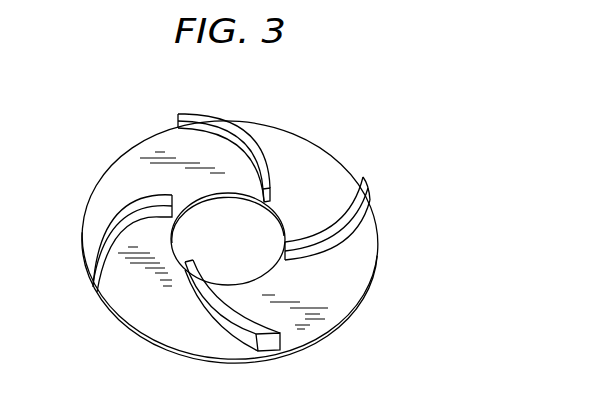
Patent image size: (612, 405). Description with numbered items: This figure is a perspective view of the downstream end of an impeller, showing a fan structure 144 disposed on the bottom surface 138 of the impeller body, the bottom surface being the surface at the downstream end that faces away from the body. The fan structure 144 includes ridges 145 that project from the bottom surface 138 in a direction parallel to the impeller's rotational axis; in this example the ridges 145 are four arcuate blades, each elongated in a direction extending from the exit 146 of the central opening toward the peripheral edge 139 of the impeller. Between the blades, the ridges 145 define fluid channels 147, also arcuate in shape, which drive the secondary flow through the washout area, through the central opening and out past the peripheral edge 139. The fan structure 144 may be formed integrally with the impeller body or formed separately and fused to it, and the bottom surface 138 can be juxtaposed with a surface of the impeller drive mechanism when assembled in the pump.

The bottom surface 138 is at (153, 308).
The peripheral edge 139 is at (264, 342).
The fan structure 144 is at (318, 113).
The ridges 145 is at (140, 199).
The exit of the central opening 146 is at (258, 236).
The fluid channels 147 is at (298, 172).